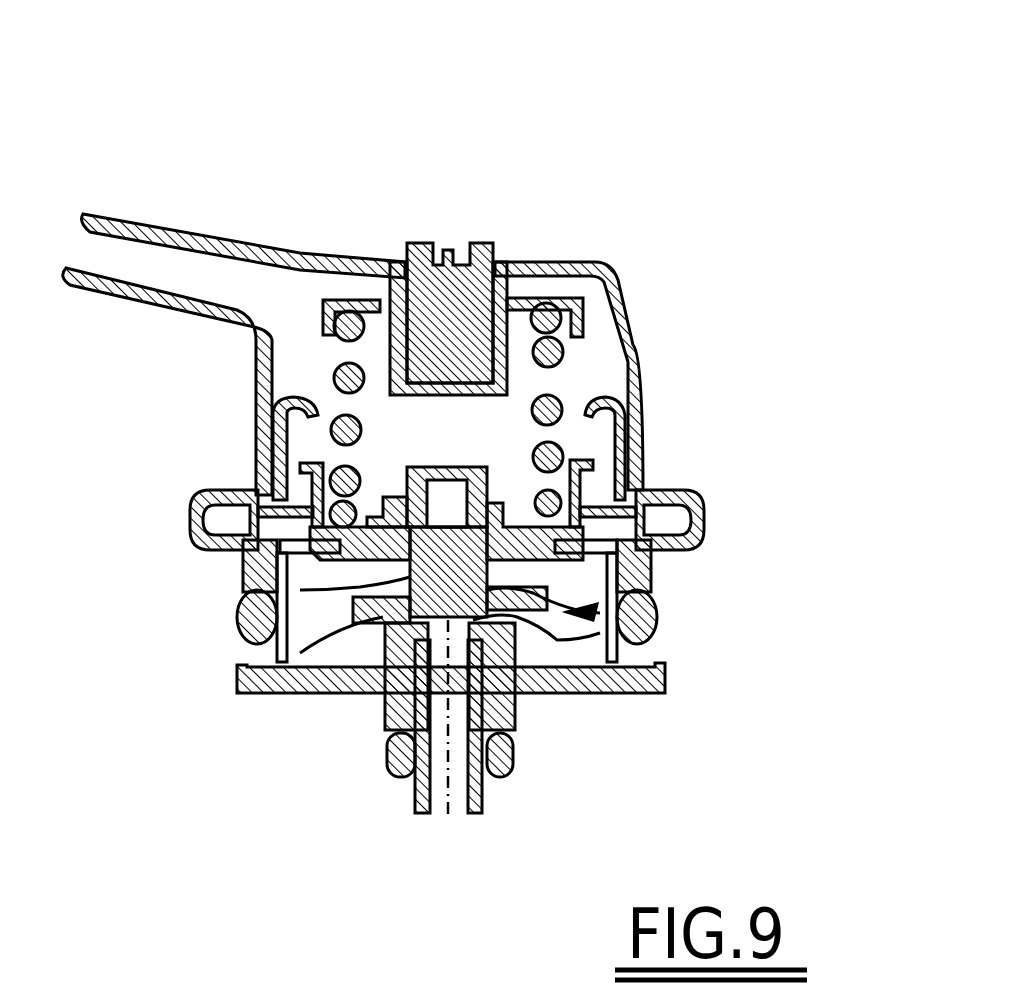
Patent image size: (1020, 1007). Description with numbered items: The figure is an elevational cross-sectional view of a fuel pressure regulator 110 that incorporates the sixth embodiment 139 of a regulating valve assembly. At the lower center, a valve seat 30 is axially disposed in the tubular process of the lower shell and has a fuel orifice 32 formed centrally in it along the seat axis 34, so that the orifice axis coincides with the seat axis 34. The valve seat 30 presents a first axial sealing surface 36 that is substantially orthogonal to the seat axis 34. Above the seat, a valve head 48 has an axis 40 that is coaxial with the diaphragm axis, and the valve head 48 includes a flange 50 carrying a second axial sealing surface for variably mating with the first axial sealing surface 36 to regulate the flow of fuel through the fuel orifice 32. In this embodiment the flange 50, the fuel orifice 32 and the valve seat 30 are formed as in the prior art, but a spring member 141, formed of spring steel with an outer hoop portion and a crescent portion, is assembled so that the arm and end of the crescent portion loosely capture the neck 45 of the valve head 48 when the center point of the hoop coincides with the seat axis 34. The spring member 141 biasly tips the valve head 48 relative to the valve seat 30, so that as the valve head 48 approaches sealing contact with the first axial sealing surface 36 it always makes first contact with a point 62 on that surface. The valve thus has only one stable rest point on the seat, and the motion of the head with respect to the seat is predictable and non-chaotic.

The fuel pressure regulator 110 is at (667, 197).
The valve seat 30 is at (553, 680).
The fuel orifice 32 is at (393, 745).
The seat axis 34 is at (447, 775).
The first axial sealing surface 36 is at (615, 660).
The axis 40 is at (442, 500).
The neck 45 is at (470, 550).
The valve head 48 is at (560, 570).
The flange 50 is at (290, 622).
The point 62 is at (330, 652).
The sixth embodiment 139 is at (530, 592).
The spring member 141 is at (420, 580).